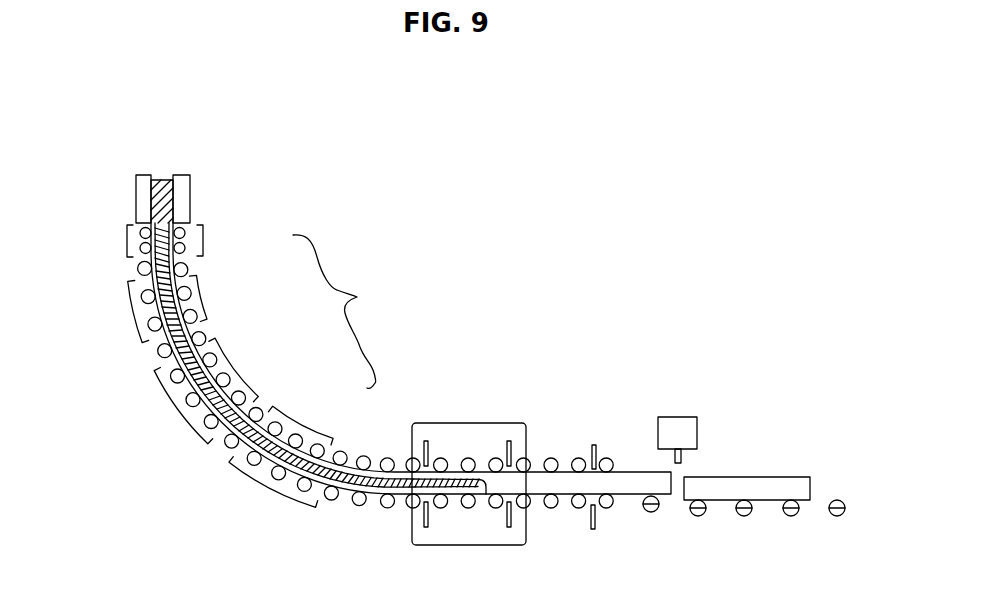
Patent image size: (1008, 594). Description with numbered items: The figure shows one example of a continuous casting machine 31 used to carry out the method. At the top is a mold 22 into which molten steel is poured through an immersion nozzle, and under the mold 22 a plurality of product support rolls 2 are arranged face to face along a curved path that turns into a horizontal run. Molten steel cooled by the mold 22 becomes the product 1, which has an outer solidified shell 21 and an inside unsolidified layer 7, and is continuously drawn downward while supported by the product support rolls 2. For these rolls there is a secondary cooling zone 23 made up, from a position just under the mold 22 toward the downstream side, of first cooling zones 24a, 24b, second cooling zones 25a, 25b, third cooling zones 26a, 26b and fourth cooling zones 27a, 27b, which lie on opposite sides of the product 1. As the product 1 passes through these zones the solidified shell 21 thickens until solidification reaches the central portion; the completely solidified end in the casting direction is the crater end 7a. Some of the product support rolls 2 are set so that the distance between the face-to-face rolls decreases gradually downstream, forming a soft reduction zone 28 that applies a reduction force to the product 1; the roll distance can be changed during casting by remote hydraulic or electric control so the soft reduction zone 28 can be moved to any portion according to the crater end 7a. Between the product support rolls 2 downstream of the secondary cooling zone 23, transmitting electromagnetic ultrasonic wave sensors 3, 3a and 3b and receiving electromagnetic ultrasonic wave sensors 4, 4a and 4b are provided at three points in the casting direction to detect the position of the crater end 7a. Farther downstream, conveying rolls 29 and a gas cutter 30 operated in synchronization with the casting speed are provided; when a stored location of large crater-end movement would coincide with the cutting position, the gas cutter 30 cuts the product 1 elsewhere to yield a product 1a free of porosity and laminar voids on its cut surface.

The product 1 is at (215, 432).
The product 1a is at (771, 477).
The product support rolls 2 is at (386, 457).
The transmitting electromagnetic ultrasonic wave sensor 3 is at (427, 440).
The transmitting electromagnetic ultrasonic wave sensor 3a is at (509, 440).
The transmitting electromagnetic ultrasonic wave sensor 3b is at (594, 444).
The receiving electromagnetic ultrasonic wave sensor 4 is at (427, 529).
The receiving electromagnetic ultrasonic wave sensor 4a is at (510, 529).
The receiving electromagnetic ultrasonic wave sensor 4b is at (593, 530).
The unsolidified layer 7 is at (160, 342).
The crater end 7a is at (483, 498).
The solidified shell 21 is at (337, 499).
The mold 22 is at (190, 197).
The secondary cooling zone 23 is at (377, 293).
The first cooling zone 24a is at (205, 240).
The first cooling zone 24b is at (125, 240).
The second cooling zone 25a is at (208, 293).
The second cooling zone 25b is at (128, 313).
The third cooling zone 26a is at (212, 365).
The third cooling zone 26b is at (173, 412).
The fourth cooling zone 27a is at (295, 418).
The fourth cooling zone 27b is at (270, 490).
The soft reduction zone 28 is at (473, 421).
The conveying rolls 29 is at (651, 513).
The gas cutter 30 is at (677, 417).
The continuous casting machine 31 is at (548, 287).